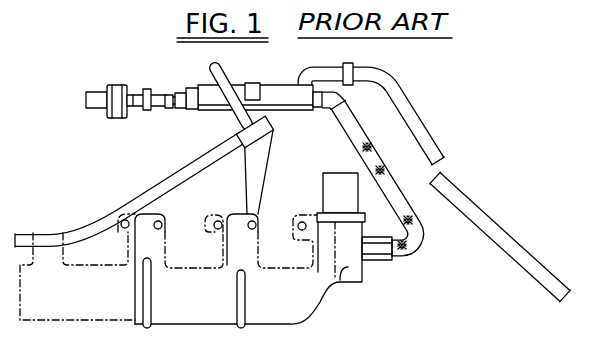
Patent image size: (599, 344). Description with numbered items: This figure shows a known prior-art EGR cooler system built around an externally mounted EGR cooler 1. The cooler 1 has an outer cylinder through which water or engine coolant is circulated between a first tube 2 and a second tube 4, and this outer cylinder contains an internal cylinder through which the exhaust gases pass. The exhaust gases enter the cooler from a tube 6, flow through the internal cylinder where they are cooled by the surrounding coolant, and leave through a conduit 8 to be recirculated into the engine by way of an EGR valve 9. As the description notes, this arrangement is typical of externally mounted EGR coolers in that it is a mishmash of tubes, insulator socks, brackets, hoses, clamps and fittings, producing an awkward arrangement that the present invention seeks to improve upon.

The EGR cooler 1 is at (278, 72).
The tube 2 is at (168, 179).
The tube 4 is at (415, 119).
The tube 6 is at (360, 146).
The conduit 8 is at (181, 91).
The EGR valve 9 is at (113, 92).